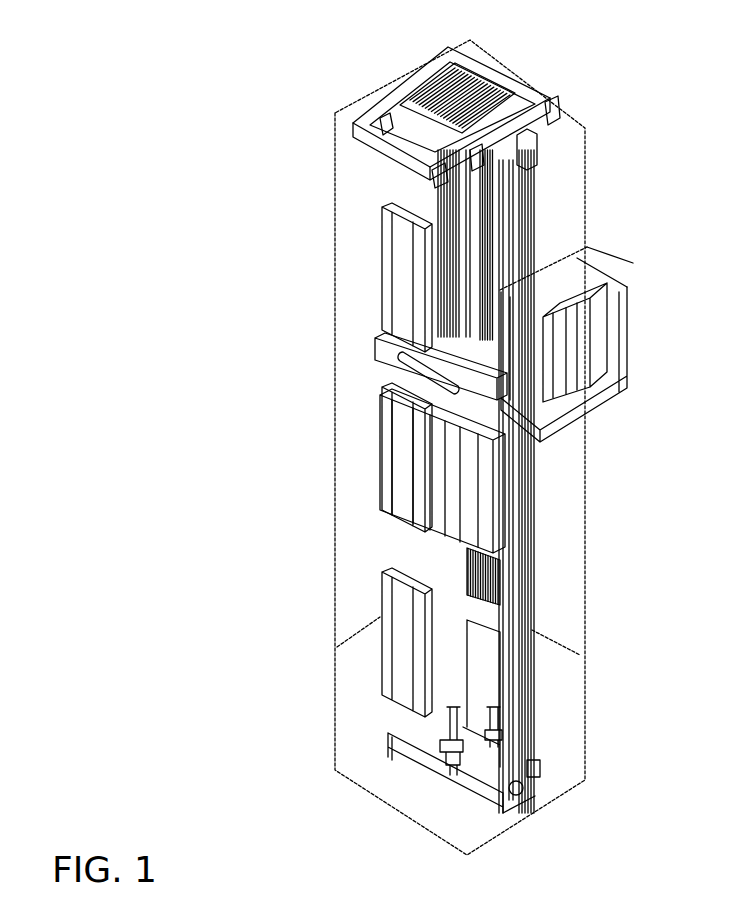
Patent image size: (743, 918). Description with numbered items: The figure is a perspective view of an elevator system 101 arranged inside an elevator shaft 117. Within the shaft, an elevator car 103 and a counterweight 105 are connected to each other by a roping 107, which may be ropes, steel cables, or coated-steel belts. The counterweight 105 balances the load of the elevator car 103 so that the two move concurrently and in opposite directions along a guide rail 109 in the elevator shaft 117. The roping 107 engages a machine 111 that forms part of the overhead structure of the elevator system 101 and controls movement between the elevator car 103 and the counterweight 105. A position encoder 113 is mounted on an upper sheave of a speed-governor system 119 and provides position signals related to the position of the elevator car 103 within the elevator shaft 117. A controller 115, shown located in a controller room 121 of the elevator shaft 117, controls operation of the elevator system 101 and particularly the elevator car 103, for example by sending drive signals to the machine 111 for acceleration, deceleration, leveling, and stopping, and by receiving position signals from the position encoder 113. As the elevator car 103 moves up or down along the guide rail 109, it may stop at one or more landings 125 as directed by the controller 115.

The elevator system 101 is at (617, 70).
The elevator car 103 is at (457, 480).
The counterweight 105 is at (500, 607).
The roping 107 is at (463, 274).
The guide rail 109 is at (517, 550).
The machine 111 is at (405, 112).
The position encoder 113 is at (540, 158).
The controller 115 is at (587, 352).
The elevator shaft 117 is at (382, 557).
The speed-governor system 119 is at (527, 190).
The controller room 121 is at (631, 264).
The landings 125 is at (380, 265).